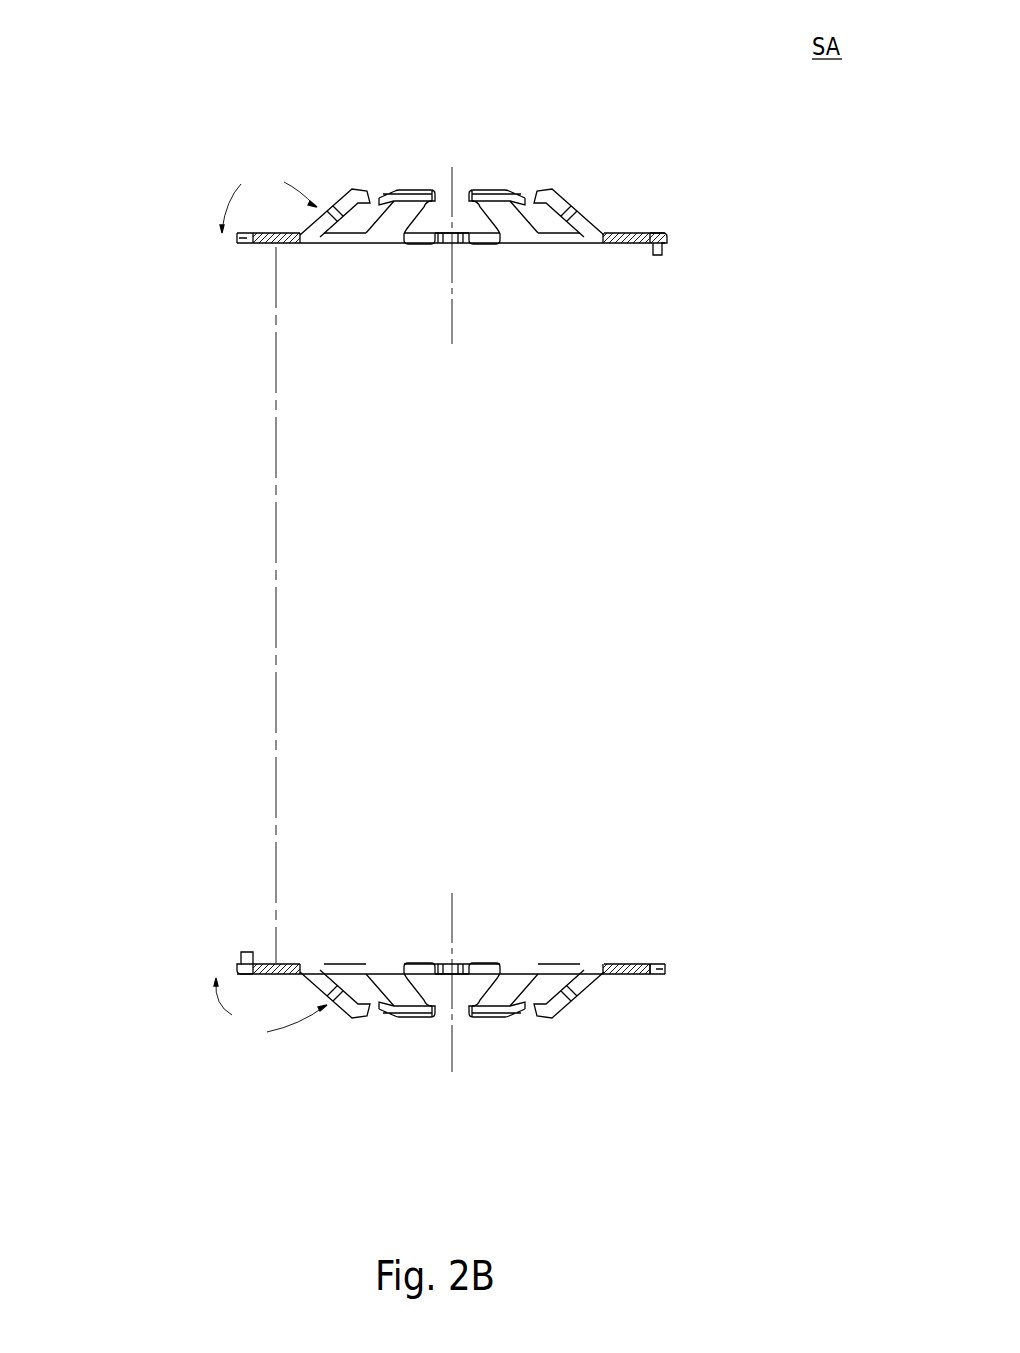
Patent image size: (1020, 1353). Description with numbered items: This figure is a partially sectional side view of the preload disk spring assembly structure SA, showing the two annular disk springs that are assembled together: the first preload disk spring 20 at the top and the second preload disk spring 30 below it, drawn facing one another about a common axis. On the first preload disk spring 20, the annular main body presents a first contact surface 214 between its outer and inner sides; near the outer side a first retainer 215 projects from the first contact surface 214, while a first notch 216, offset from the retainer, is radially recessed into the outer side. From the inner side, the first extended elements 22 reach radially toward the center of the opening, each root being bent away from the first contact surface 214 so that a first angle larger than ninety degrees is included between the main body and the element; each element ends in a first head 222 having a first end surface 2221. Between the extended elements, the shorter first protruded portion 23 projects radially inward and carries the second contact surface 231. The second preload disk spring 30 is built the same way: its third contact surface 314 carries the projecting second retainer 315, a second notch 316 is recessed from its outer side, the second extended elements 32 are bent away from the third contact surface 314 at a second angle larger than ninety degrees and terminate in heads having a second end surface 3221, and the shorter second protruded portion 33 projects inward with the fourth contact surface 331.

The first preload disk spring 20 is at (233, 137).
The first contact surface 214 is at (276, 245).
The first retainer 215 is at (657, 258).
The first notch 216 is at (218, 242).
The first extended element 22 is at (396, 227).
The first head 222 is at (457, 216).
The first end surface 2221 is at (415, 190).
The first protruded portion 23 is at (449, 238).
The second contact surface 231 is at (456, 247).
The second preload disk spring 30 is at (210, 1033).
The third contact surface 314 is at (628, 962).
The second retainer 315 is at (248, 950).
The second notch 316 is at (660, 976).
The second extended element 32 is at (512, 976).
The second end surface 3221 is at (407, 1018).
The second protruded portion 33 is at (456, 1005).
The fourth contact surface 331 is at (445, 960).